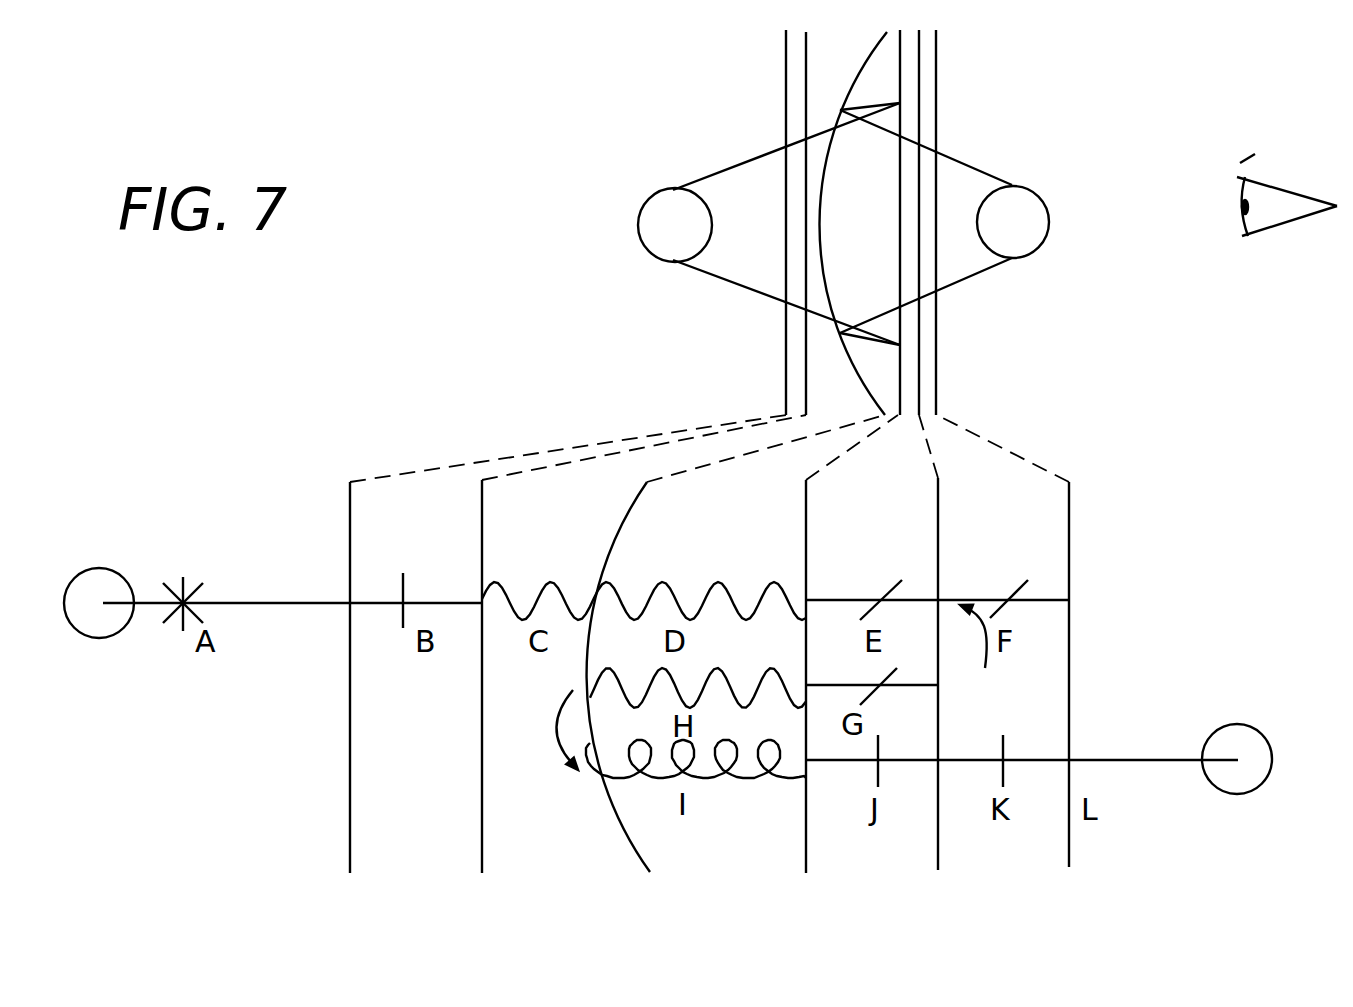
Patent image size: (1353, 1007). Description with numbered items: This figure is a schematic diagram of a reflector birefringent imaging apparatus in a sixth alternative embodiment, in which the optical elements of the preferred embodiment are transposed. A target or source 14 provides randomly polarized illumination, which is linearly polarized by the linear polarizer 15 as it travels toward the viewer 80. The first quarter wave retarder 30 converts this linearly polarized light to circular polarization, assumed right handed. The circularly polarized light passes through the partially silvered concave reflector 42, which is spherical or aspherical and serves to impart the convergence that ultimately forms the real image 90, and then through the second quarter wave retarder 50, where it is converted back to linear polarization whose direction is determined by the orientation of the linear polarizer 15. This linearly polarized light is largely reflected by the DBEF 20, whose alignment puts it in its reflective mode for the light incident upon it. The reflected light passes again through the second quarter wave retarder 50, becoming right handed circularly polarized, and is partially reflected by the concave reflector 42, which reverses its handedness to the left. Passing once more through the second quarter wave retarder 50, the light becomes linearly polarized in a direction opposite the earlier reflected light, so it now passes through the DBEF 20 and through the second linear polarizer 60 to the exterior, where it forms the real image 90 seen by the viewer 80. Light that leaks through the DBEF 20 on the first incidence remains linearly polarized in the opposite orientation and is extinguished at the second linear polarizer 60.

The target or source 14 is at (655, 207).
The real image 90 is at (1033, 215).
The viewer 80 is at (1293, 208).
The linear polarizer 15 is at (562, 667).
The first quarter wave retarder 30 is at (637, 667).
The partially silvered concave reflector 42 is at (736, 667).
The second quarter wave retarder 50 is at (845, 667).
The DBEF 20 is at (935, 667).
The second linear polarizer 60 is at (1010, 665).